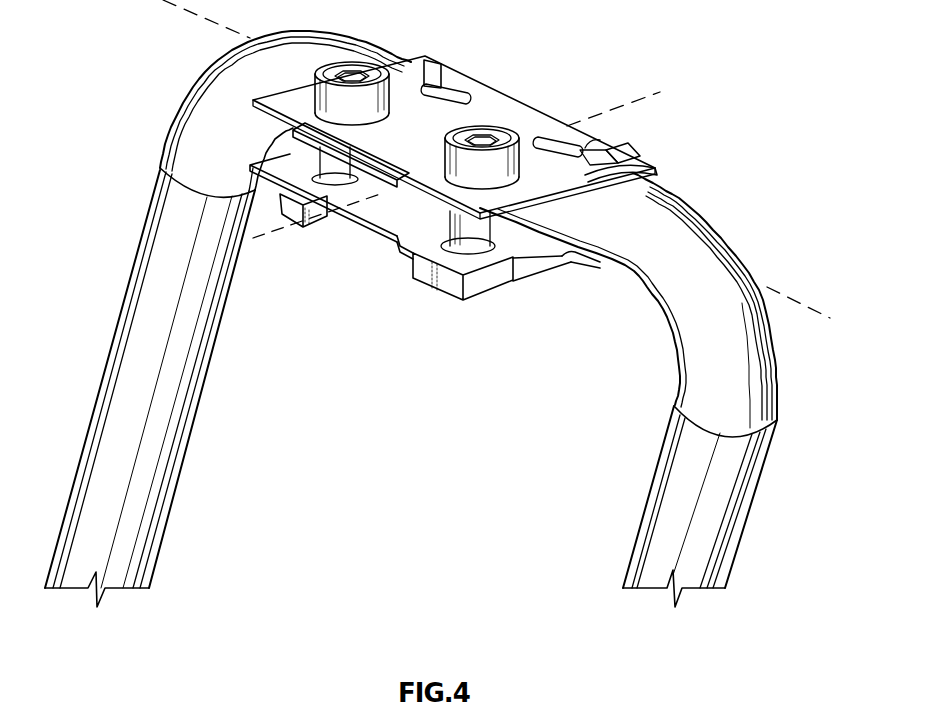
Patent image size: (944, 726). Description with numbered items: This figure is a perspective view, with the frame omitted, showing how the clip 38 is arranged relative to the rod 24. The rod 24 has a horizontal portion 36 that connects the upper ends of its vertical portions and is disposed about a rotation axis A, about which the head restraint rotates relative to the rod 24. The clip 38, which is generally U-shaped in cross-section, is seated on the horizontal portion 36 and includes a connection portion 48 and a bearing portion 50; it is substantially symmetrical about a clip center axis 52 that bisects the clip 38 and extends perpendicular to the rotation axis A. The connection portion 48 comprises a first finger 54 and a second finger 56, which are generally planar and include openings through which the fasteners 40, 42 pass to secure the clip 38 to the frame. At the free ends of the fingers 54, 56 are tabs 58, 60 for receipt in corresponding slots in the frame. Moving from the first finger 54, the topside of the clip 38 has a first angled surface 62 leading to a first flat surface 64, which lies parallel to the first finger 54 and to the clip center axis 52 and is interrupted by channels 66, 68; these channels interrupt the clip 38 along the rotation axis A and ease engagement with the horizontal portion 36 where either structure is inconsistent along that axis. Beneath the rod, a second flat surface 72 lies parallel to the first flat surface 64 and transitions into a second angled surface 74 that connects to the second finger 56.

The rod 24 is at (760, 477).
The horizontal portion 36 is at (636, 190).
The clip 38 is at (505, 94).
The fastener 40 is at (346, 70).
The fastener 42 is at (513, 136).
The connection portion 48 is at (526, 273).
The bearing portion 50 is at (663, 150).
The clip center axis 52 is at (628, 102).
The first finger 54 is at (393, 165).
The second finger 56 is at (435, 228).
The tab 58 is at (330, 168).
The tab 60 is at (407, 250).
The first angled surface 62 is at (628, 172).
The first flat surface 64 is at (426, 66).
The channel 66 is at (443, 79).
The channel 68 is at (589, 141).
The second flat surface 72 is at (600, 265).
The second angled surface 74 is at (574, 268).
The rotation axis A is at (779, 293).